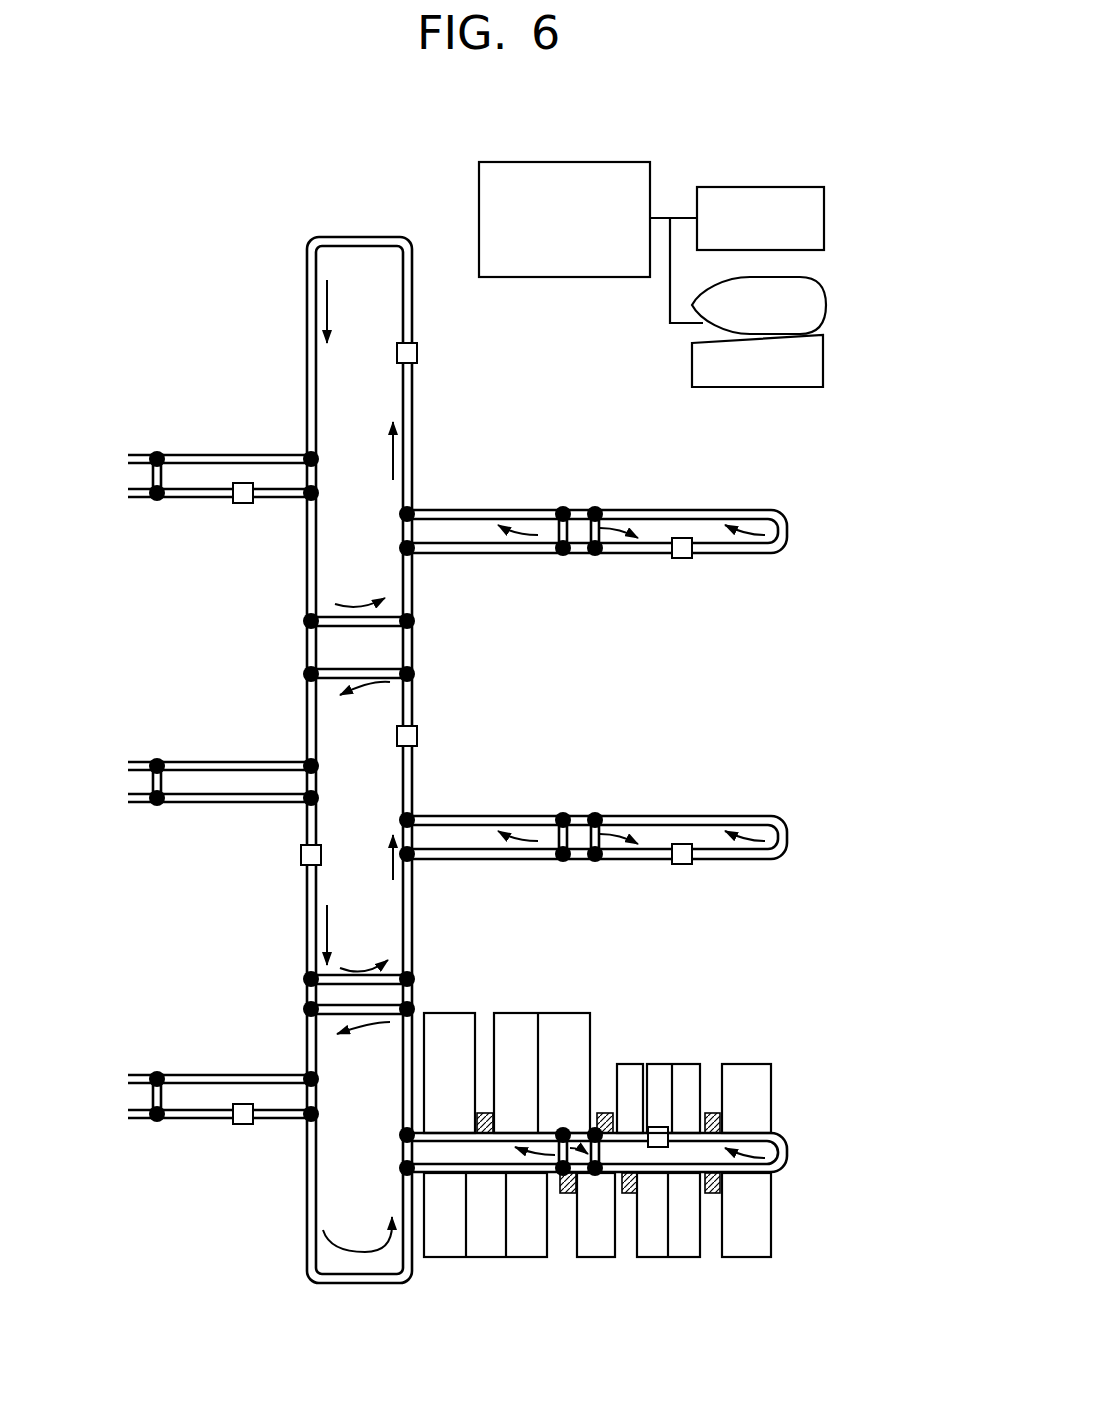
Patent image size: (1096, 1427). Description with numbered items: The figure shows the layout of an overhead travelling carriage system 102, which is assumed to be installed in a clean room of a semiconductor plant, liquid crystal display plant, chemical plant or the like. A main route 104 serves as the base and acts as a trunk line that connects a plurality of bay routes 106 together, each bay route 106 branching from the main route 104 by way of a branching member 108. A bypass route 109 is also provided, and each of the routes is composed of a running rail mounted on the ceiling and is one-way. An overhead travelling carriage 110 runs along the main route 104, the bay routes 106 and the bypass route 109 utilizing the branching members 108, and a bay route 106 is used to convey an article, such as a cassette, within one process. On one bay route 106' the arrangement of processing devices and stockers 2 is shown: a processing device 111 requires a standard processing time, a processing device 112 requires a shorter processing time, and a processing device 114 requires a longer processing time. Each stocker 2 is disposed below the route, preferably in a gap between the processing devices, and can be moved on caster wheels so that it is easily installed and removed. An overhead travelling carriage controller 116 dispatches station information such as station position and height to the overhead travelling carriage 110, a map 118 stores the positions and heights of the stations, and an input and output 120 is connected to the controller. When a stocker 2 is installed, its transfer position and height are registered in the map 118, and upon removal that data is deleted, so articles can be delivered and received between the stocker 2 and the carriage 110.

The stocker 2 is at (486, 1112).
The overhead travelling carriage system 102 is at (200, 308).
The main route 104 is at (412, 928).
The bay route 106 is at (459, 820).
The bay route 106' is at (646, 1152).
The branching member 108 is at (165, 455).
The bypass route 109 is at (128, 470).
The overhead travelling carriage 110 is at (418, 353).
The processing device 111 is at (552, 1030).
The processing device 112 is at (596, 1257).
The processing device 114 is at (455, 1030).
The overhead travelling carriage controller 116 is at (580, 277).
The map 118 is at (760, 187).
The input and output 120 is at (767, 387).